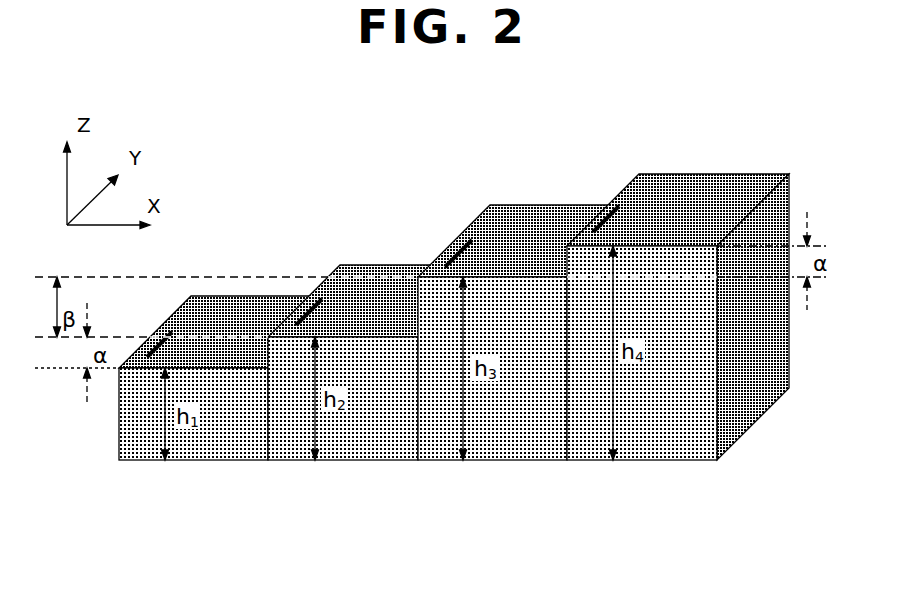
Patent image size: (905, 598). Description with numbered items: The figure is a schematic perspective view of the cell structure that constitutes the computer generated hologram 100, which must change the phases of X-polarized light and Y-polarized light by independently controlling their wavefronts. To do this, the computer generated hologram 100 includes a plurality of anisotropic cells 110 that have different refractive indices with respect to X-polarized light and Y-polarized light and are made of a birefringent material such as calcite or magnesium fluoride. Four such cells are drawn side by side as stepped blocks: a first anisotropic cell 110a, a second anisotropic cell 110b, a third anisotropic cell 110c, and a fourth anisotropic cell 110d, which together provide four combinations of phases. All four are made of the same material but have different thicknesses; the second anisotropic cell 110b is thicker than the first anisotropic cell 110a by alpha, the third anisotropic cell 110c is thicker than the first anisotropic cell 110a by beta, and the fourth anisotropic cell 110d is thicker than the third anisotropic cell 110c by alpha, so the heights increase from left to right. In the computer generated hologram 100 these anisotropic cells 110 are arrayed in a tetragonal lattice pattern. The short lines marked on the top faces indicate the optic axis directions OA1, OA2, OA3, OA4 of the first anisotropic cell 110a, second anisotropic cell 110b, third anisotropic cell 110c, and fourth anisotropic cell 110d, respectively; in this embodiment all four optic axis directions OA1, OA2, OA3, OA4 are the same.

The computer generated hologram 100 is at (452, 127).
The anisotropic cells 110 is at (690, 522).
The first anisotropic cell 110a is at (229, 401).
The second anisotropic cell 110b is at (379, 372).
The third anisotropic cell 110c is at (528, 344).
The fourth anisotropic cell 110d is at (678, 327).
The optic axis direction of the first anisotropic cell OA1 is at (153, 335).
The optic axis direction of the second anisotropic cell OA2 is at (302, 303).
The optic axis direction of the third anisotropic cell OA3 is at (452, 250).
The optic axis direction of the fourth anisotropic cell OA4 is at (596, 228).